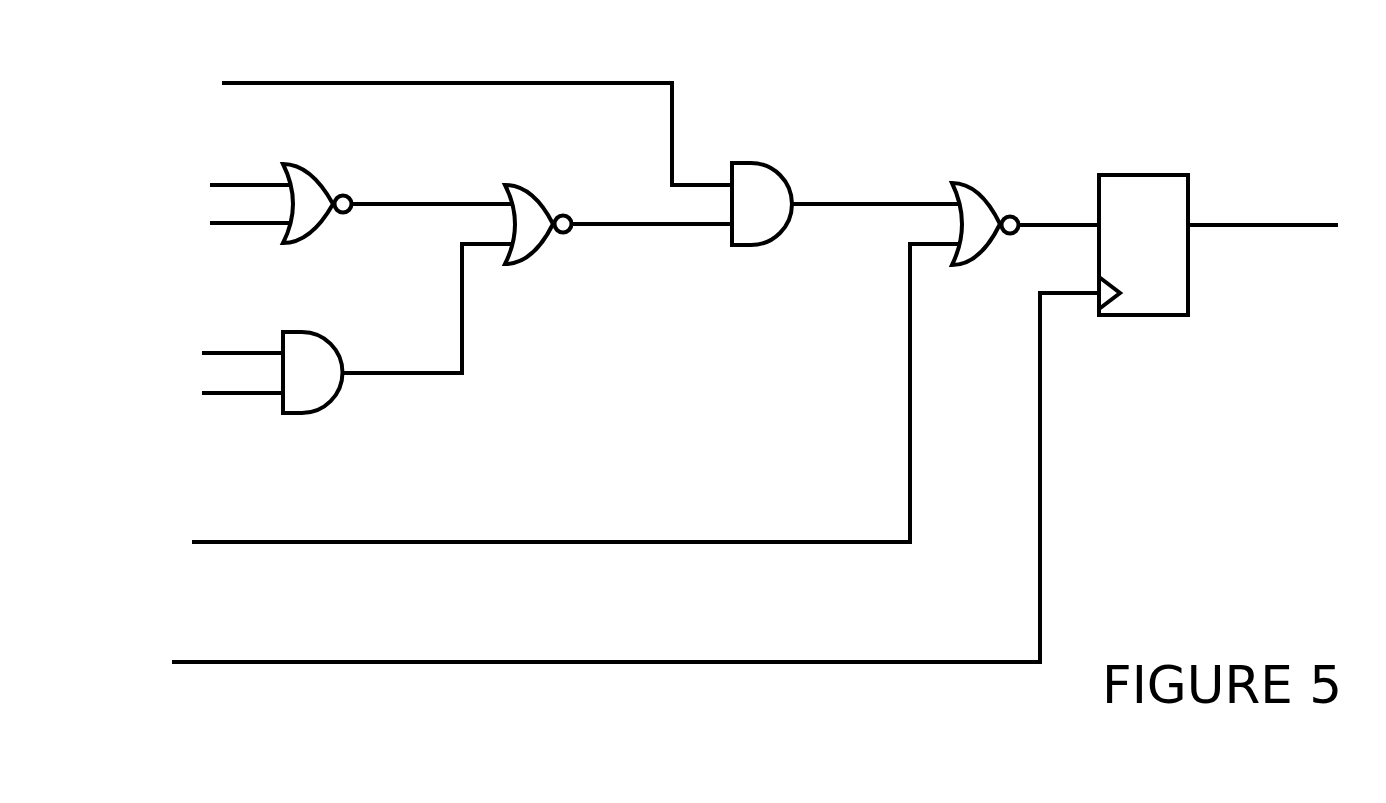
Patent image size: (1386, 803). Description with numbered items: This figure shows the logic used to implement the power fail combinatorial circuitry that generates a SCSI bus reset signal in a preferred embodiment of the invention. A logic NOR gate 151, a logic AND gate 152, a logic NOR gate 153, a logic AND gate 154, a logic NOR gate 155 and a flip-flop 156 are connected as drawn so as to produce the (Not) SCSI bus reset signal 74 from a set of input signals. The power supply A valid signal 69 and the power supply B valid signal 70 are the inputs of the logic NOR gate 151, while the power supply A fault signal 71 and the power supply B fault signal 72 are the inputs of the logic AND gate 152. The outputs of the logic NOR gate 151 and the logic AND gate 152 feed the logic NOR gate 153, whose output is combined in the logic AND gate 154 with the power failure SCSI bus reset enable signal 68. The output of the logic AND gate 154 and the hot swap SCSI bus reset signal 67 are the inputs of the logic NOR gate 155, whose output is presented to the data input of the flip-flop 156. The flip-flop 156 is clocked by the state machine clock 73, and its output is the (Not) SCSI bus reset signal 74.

The hot swap SCSI bus reset signal 67 is at (230, 545).
The power failure SCSI bus reset enable signal 68 is at (248, 87).
The power supply A valid signal 69 is at (205, 185).
The power supply B valid signal 70 is at (248, 227).
The power supply A fault signal 71 is at (193, 353).
The power supply B fault signal 72 is at (240, 397).
The state machine clock 73 is at (230, 665).
The (Not) SCSI bus reset signal 74 is at (1303, 228).
The logic NOR gate 151 is at (338, 175).
The logic AND gate 152 is at (317, 333).
The logic NOR gate 153 is at (548, 203).
The logic AND gate 154 is at (763, 165).
The logic NOR gate 155 is at (993, 205).
The flip-flop 156 is at (1192, 183).